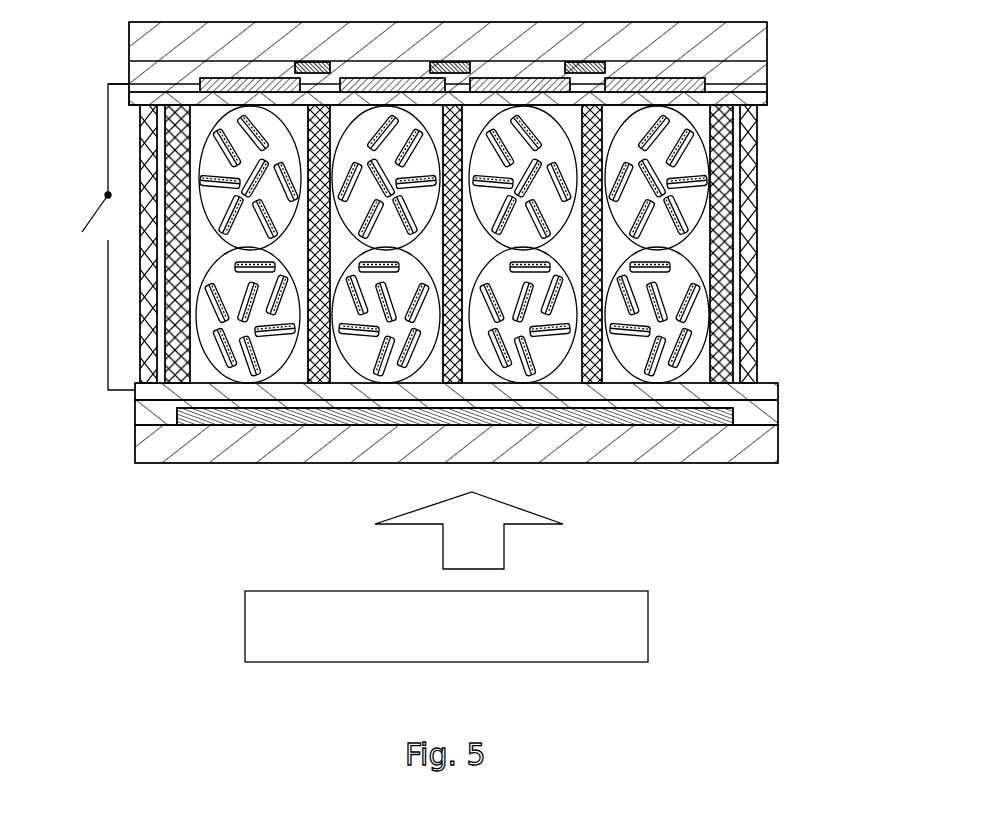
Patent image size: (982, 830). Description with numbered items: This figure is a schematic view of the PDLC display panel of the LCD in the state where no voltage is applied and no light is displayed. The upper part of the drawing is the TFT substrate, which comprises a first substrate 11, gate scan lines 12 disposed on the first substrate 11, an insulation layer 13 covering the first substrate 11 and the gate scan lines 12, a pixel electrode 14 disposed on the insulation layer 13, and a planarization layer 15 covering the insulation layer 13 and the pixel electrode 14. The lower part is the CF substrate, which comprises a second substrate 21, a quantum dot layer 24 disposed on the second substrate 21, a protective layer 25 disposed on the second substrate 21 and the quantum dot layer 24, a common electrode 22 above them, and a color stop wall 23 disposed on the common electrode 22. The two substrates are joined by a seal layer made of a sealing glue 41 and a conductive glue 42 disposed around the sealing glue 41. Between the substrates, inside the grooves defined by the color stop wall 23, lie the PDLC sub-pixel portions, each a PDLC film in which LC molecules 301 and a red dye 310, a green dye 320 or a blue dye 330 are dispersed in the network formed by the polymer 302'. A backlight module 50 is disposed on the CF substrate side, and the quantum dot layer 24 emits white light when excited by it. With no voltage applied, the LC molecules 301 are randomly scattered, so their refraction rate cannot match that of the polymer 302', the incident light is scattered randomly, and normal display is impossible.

The first substrate 11 is at (715, 43).
The gate scan lines 12 is at (602, 63).
The insulation layer 13 is at (707, 82).
The pixel electrode 14 is at (707, 88).
The planarization layer 15 is at (720, 100).
The second substrate 21 is at (723, 443).
The common electrode 22 is at (737, 393).
The color stop wall 23 is at (652, 315).
The quantum dot layer 24 is at (730, 420).
The protective layer 25 is at (740, 413).
The sealing glue 41 is at (722, 255).
The conductive glue 42 is at (750, 190).
The backlight module 50 is at (648, 632).
The LC molecules 301 is at (200, 185).
The polymer 302' is at (165, 178).
The red dye 310 is at (171, 315).
The green dye 320 is at (171, 315).
The blue dye 330 is at (297, 347).